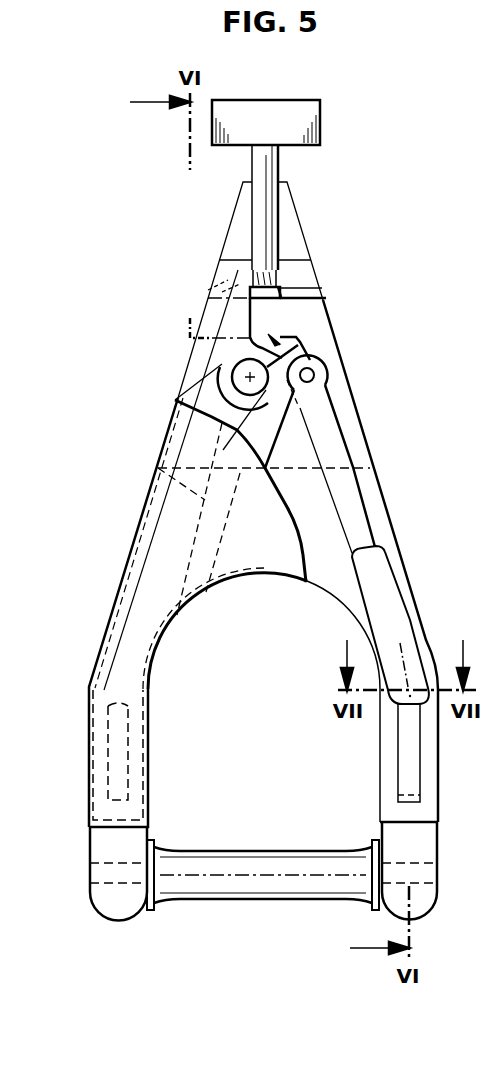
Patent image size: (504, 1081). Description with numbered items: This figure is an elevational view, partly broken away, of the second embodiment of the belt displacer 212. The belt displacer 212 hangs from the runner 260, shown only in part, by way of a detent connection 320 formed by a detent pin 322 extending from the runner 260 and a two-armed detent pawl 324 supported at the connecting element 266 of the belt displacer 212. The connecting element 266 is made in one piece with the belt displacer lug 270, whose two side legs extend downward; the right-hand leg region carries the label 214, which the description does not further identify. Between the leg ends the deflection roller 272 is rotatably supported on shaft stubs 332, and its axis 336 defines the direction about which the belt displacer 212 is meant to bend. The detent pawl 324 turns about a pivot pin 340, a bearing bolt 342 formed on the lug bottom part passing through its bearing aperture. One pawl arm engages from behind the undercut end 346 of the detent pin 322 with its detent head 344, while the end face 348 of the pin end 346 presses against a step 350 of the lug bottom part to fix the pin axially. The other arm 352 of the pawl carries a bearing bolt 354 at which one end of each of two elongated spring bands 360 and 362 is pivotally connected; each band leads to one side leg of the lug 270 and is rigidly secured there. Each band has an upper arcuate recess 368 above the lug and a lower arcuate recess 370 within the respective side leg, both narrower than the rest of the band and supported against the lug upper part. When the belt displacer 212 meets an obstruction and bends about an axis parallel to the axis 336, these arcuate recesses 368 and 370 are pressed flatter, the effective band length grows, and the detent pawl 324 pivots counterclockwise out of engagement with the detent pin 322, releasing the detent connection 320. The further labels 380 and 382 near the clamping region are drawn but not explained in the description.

The belt displacer 212 is at (146, 452).
The second arm 214 is at (443, 738).
The runner 260 is at (322, 127).
The connecting element 266 is at (172, 405).
The belt displacer lug 270 is at (88, 722).
The deflection roller 272 is at (277, 880).
The detent connection 320 is at (288, 266).
The detent pin 322 is at (280, 194).
The two-armed detent pawl 324 is at (181, 338).
The foot 332 is at (415, 880).
The axis of the deflection roller 336 is at (195, 880).
The pivot pin 340 is at (232, 373).
The bearing bolt 342 is at (300, 344).
The detent head 344 is at (250, 284).
The undercut end of the detent pin 346 is at (284, 292).
The end face 348 is at (284, 300).
The step 350 is at (222, 297).
The other arm of the detent pawl 352 is at (312, 355).
The bearing bolt 354 is at (316, 376).
The spring band 360 is at (136, 616).
The spring band 362 is at (392, 622).
The upper arcuate recess 368 is at (196, 517).
The lower arcuate recess 370 is at (116, 766).
The holder 380 is at (254, 276).
The pin 382 is at (283, 290).